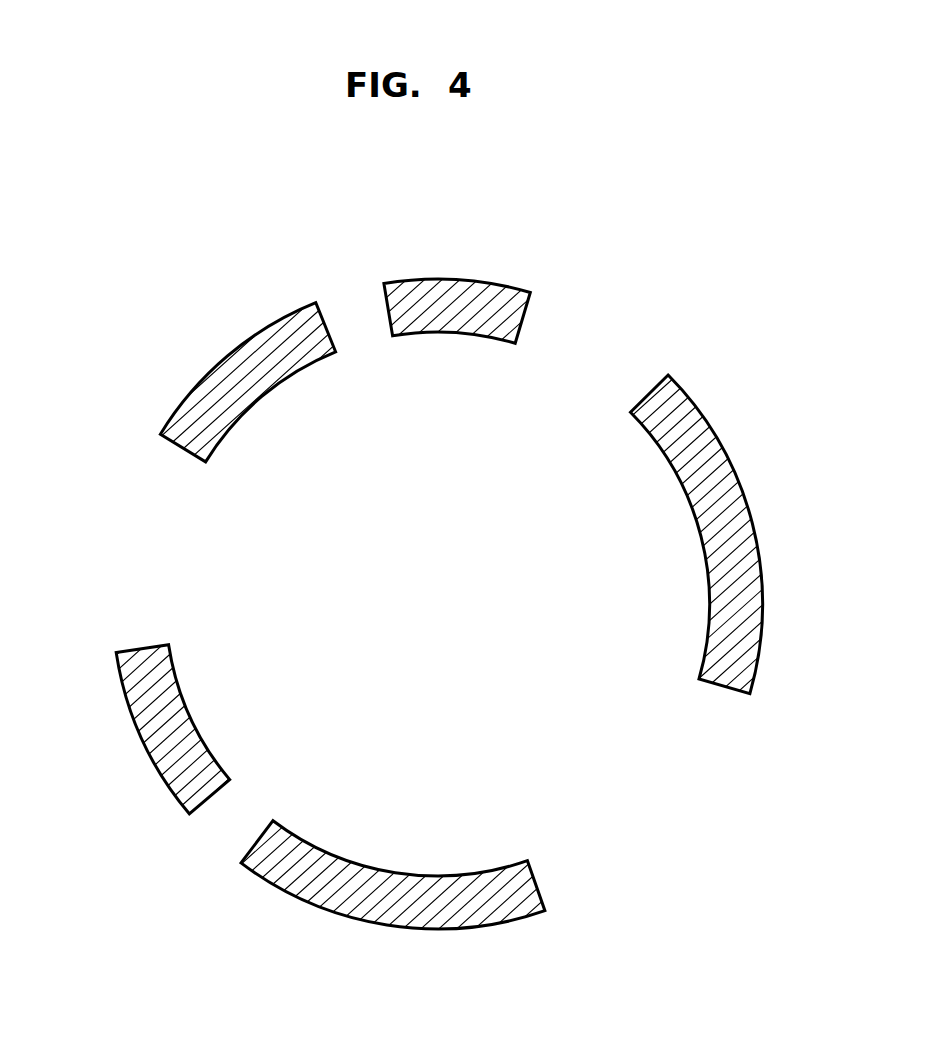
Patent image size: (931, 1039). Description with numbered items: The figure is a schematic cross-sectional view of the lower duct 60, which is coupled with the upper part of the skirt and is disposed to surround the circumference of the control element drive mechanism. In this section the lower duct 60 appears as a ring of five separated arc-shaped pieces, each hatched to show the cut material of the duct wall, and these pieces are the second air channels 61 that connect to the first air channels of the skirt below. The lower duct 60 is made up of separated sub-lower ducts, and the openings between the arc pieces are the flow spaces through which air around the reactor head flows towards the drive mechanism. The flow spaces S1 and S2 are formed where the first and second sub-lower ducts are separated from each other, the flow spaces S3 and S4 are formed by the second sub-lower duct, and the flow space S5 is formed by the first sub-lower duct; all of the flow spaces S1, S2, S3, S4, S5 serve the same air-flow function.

The lower duct 60 is at (163, 268).
The second air channel 61 is at (466, 290).
The flow space S1 is at (660, 785).
The flow space S2 is at (358, 313).
The flow space S3 is at (228, 820).
The flow space S4 is at (163, 515).
The flow space S5 is at (625, 368).